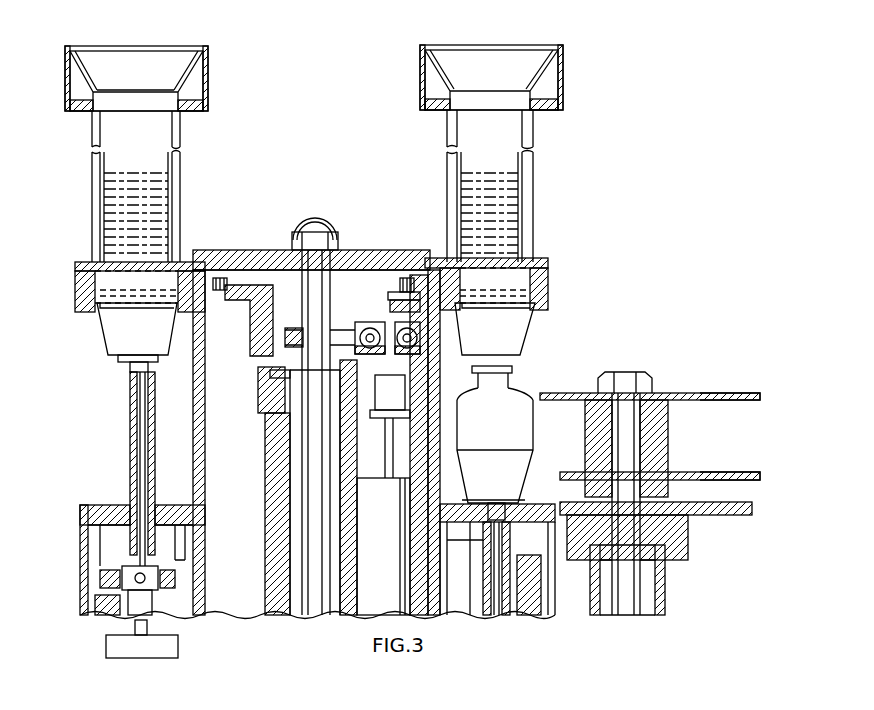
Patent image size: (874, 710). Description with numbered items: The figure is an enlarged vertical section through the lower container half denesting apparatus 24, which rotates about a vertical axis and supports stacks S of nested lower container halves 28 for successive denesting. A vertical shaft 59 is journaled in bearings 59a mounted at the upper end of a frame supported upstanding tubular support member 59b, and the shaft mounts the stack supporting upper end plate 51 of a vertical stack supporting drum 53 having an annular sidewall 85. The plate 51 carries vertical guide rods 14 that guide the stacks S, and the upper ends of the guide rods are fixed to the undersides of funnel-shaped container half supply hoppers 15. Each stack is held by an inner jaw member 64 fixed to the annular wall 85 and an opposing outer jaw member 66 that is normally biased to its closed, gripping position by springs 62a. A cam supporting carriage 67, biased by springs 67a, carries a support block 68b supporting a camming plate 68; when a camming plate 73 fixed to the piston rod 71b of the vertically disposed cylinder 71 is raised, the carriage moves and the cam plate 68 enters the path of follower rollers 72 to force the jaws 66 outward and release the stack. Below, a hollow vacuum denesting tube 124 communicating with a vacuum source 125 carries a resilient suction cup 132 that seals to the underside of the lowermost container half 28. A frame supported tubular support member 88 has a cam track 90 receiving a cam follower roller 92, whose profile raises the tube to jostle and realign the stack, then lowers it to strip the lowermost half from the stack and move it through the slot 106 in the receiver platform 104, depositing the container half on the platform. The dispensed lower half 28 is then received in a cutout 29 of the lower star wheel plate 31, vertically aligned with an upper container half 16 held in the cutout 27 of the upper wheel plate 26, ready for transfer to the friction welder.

The container half supply hopper 15 is at (560, 78).
The vertical guide rod 14 is at (92, 132).
The stack of container halves S is at (104, 222).
The outer jaw member 66 is at (75, 296).
The inner jaw member 64 is at (178, 316).
The lower container half 28 is at (108, 336).
The spring 62a is at (470, 306).
The resilient suction cup 132 is at (125, 368).
The vacuum denesting tube 124 is at (128, 440).
The annular sidewall 85 is at (200, 460).
The camming plate 68 is at (268, 262).
The stack supporting upper end plate 51 is at (372, 250).
The vertical stack supporting drum 53 is at (338, 215).
The vertical shaft 59 is at (306, 617).
The lower container half denesting apparatus 24 is at (344, 148).
The support block 68b is at (258, 340).
The follower roller 72 is at (220, 291).
The camming plate 73 is at (368, 322).
The cam supporting carriage 67 is at (360, 336).
The spring 67a is at (313, 487).
The bearing 59a is at (262, 396).
The upstanding tubular support member 59b is at (268, 435).
The piston rod 71b is at (388, 455).
The cylinder 71 is at (390, 558).
The upper container half 16 is at (518, 392).
The receiver platform 104 is at (478, 503).
The slot 106 is at (514, 506).
The upper star wheel plate 26 is at (695, 393).
The cutout 27 is at (748, 393).
The lower star wheel plate 31 is at (686, 474).
The cutout 29 is at (742, 477).
The tubular support member 88 is at (90, 606).
The cam track 90 is at (120, 580).
The cam follower roller 92 is at (105, 573).
The vacuum source 125 is at (178, 646).